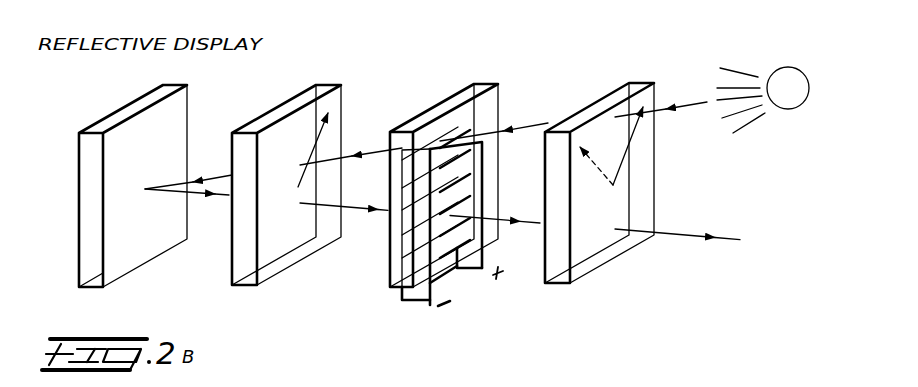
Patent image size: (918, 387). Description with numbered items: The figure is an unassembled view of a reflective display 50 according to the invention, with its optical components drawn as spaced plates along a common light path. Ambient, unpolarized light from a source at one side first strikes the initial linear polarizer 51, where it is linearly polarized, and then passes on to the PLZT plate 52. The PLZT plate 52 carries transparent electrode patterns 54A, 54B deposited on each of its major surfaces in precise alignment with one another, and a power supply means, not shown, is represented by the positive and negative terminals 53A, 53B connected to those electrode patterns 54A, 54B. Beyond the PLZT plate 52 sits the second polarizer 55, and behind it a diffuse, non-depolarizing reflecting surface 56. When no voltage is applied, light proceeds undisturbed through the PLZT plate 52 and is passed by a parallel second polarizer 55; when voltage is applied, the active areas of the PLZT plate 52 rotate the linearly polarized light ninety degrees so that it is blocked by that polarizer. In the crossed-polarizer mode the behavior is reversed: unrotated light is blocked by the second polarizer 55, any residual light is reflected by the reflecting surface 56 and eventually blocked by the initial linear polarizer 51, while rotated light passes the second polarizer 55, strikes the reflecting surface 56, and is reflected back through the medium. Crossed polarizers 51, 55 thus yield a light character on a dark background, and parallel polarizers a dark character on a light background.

The reflective display 50 is at (595, 41).
The initial linear polarizer 51 is at (655, 92).
The PLZT plate 52 is at (491, 111).
The positive terminal 53A is at (483, 279).
The negative terminal 53B is at (432, 305).
The transparent electrode pattern 54A is at (480, 162).
The transparent electrode pattern 54B is at (392, 164).
The second polarizer 55 is at (337, 106).
The reflecting surface 56 is at (186, 106).